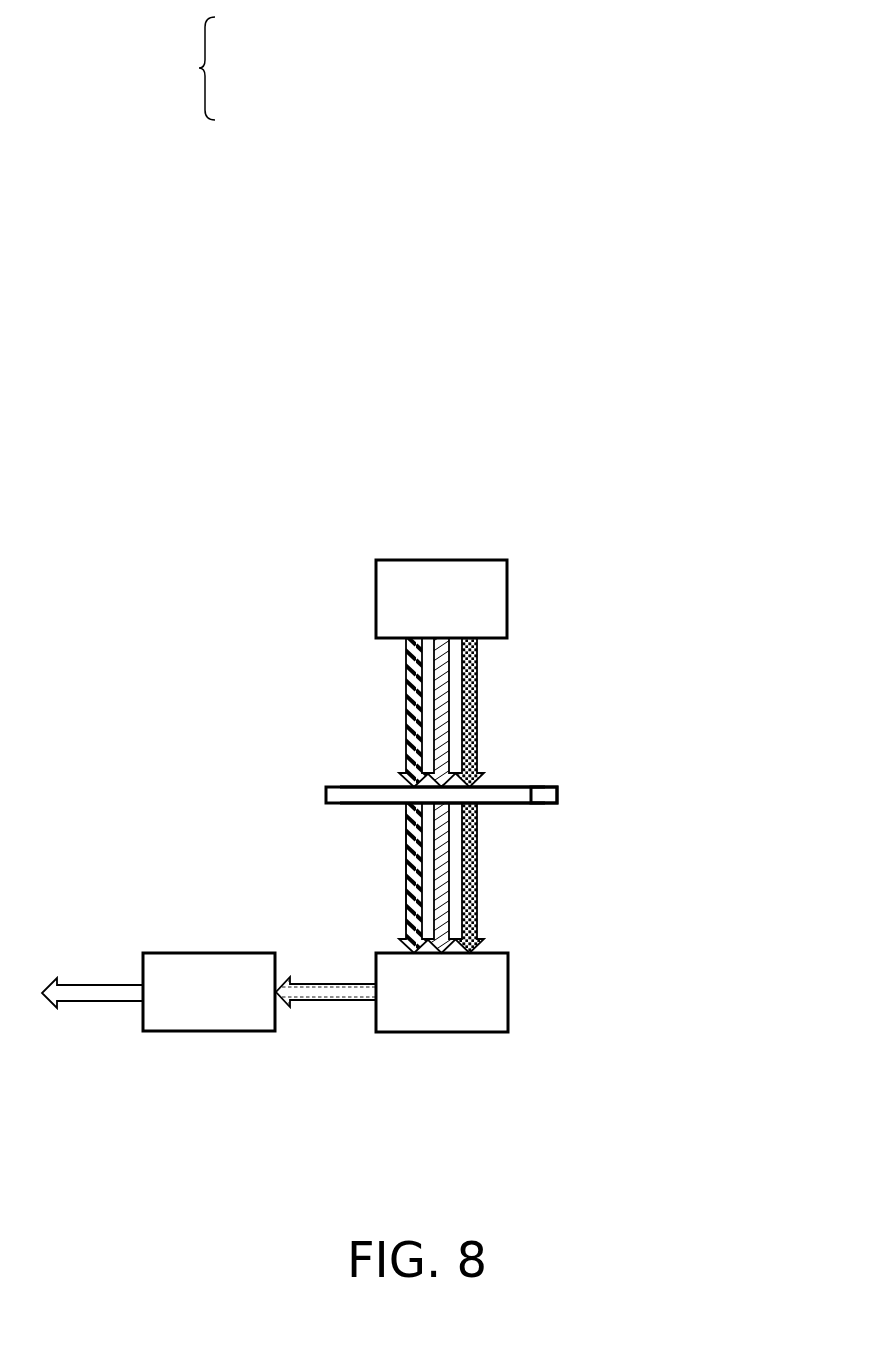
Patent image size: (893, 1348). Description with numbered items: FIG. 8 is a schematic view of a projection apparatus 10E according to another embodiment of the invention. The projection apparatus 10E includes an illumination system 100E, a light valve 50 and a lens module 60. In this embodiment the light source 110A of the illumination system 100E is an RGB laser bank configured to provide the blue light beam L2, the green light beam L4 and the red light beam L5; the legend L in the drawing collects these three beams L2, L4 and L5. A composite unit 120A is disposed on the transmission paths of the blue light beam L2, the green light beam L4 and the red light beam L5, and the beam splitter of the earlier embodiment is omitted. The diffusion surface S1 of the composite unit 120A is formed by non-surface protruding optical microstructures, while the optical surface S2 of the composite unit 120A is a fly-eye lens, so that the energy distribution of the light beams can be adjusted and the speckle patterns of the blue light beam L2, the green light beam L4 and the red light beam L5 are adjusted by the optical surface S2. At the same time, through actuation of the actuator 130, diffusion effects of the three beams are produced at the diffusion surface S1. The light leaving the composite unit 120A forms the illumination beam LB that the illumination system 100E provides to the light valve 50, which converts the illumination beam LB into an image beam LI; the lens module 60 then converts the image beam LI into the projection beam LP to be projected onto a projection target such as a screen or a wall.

The projection apparatus 10E is at (778, 1114).
The illumination system 100E is at (281, 479).
The light source 110A is at (488, 600).
The composite unit 120A is at (337, 797).
The actuator 130 is at (545, 796).
The diffusion surface S1 is at (517, 787).
The optical surface S2 is at (517, 803).
The light beams L is at (217, 68).
The blue light beam L2 is at (469, 735).
The green light beam L4 is at (410, 687).
The red light beam L5 is at (442, 690).
The illumination beam LB is at (370, 909).
The light valve 50 is at (440, 1010).
The lens module 60 is at (207, 1010).
The image beam LI is at (325, 993).
The projection beam LP is at (100, 993).